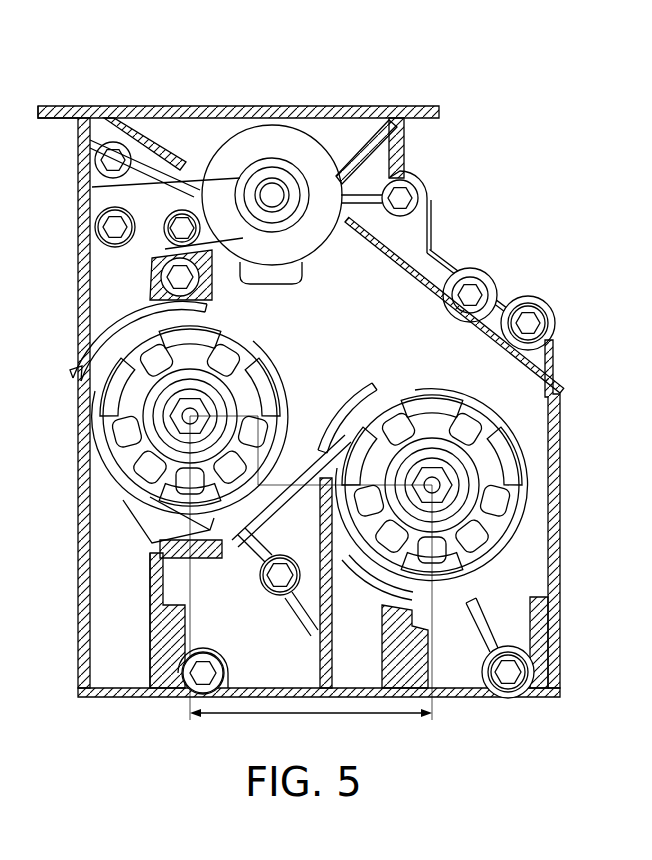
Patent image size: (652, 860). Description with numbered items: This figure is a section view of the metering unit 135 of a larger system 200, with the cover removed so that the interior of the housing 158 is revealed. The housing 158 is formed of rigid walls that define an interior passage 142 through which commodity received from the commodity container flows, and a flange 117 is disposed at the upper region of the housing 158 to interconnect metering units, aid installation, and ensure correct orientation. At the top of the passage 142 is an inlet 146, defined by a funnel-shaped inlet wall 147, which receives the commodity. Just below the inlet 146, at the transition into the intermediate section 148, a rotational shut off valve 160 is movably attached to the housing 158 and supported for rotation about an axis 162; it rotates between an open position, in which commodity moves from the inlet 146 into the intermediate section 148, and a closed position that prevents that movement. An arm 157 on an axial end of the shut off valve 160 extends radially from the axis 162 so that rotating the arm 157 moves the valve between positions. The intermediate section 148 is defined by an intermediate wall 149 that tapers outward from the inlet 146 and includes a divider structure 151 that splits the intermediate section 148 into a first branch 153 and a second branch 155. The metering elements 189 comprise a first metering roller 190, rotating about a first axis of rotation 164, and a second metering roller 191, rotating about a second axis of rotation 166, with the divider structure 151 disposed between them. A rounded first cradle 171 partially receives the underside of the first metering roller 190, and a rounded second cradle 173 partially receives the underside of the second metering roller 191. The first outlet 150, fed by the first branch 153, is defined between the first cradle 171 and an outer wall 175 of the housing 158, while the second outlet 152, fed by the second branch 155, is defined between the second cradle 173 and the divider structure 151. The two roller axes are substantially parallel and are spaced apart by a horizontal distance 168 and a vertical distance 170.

The printing system 200 is at (0, 47).
The metering unit 135 is at (360, 52).
The housing 158 is at (233, 106).
The flange 117 is at (52, 119).
The inlet 146 is at (337, 125).
The shut off valve 160 is at (291, 174).
The axis 162 is at (268, 197).
The inlet wall 147 is at (155, 158).
The arm 157 is at (160, 255).
The interior passage 142 is at (359, 272).
The intermediate wall 149 is at (396, 278).
The intermediate section 148 is at (351, 356).
The outer wall 175 is at (82, 540).
The first axis of rotation 164 is at (190, 414).
The first metering roller 190 is at (140, 396).
The vertical distance 170 is at (262, 432).
The metering elements 189 is at (134, 443).
The first branch 153 is at (119, 552).
The first cradle 171 is at (212, 565).
The first outlet 150 is at (143, 667).
The divider structure 151 is at (316, 447).
The second branch 155 is at (322, 582).
The second outlet 152 is at (381, 667).
The second axis of rotation 166 is at (490, 560).
The second metering roller 191 is at (480, 515).
The second cradle 173 is at (515, 612).
The horizontal distance 168 is at (312, 714).